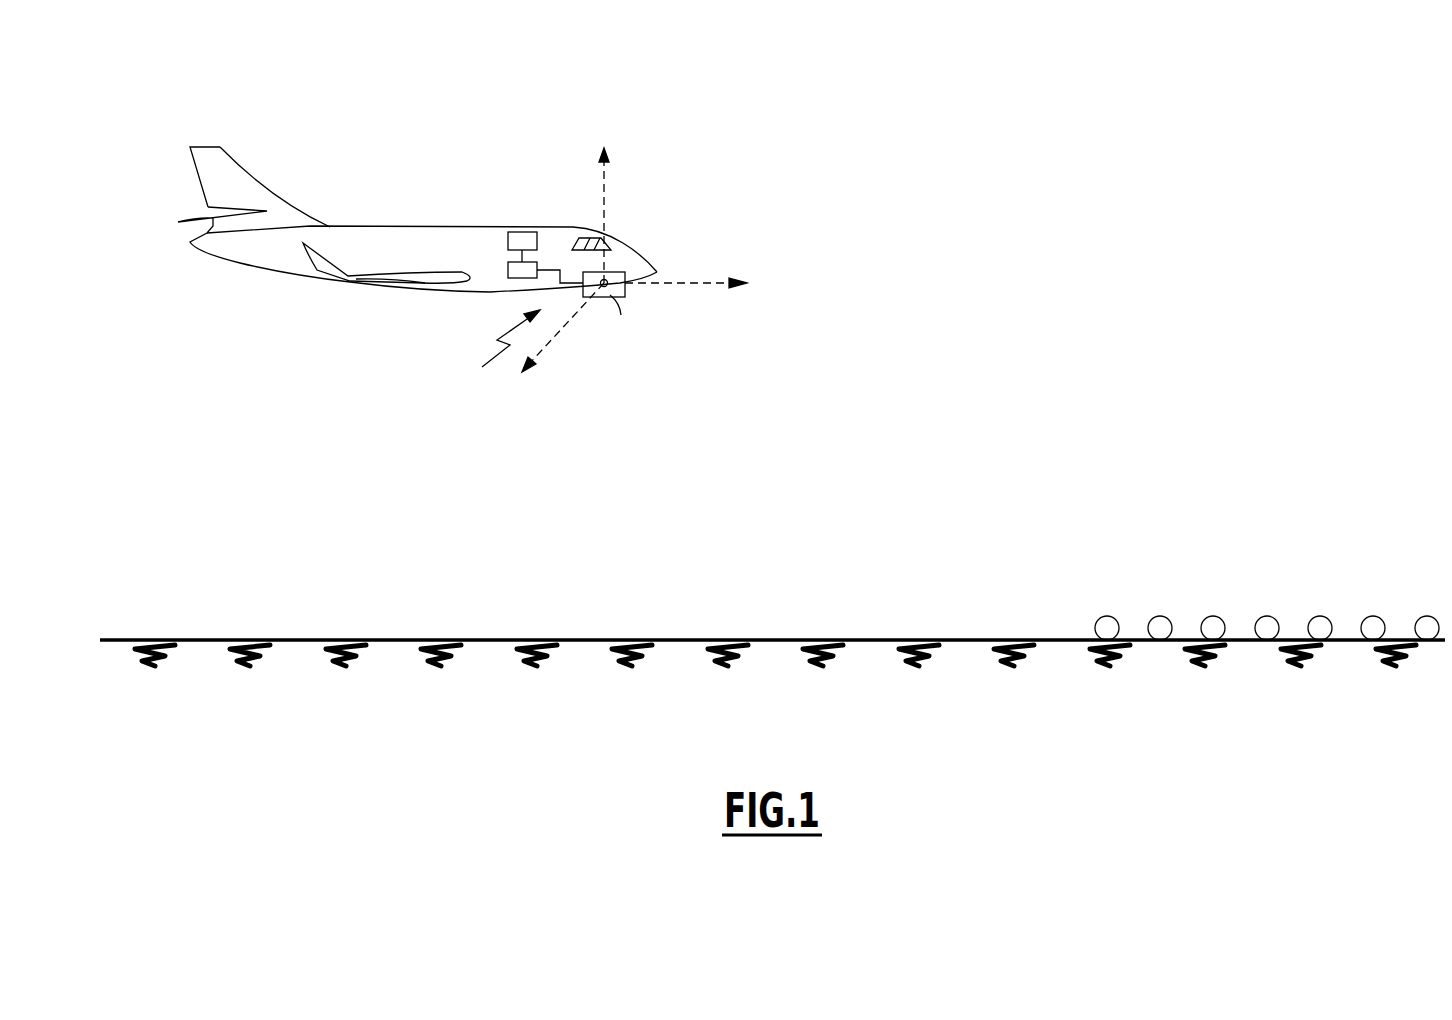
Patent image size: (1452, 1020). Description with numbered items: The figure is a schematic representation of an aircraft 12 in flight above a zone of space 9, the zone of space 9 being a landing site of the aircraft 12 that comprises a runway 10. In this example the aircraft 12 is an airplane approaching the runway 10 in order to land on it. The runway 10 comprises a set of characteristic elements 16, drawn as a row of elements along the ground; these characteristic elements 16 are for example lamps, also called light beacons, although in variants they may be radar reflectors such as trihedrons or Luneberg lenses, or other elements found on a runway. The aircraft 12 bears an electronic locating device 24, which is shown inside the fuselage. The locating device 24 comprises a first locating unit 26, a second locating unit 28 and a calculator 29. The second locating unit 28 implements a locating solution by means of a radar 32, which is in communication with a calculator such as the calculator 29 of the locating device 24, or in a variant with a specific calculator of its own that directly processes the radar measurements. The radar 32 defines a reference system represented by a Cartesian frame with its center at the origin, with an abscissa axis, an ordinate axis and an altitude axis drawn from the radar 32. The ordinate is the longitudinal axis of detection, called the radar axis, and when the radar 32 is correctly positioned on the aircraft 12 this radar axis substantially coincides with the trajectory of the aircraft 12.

The aircraft 12 is at (540, 141).
The first locating unit 26 is at (507, 240).
The calculator 29 is at (507, 273).
The radar 32 is at (604, 296).
The second locating unit 28 is at (625, 288).
The electronic locating device 24 is at (495, 350).
The zone of space 9 is at (1122, 400).
The runway 10 is at (1169, 535).
The characteristic elements 16 is at (1427, 625).